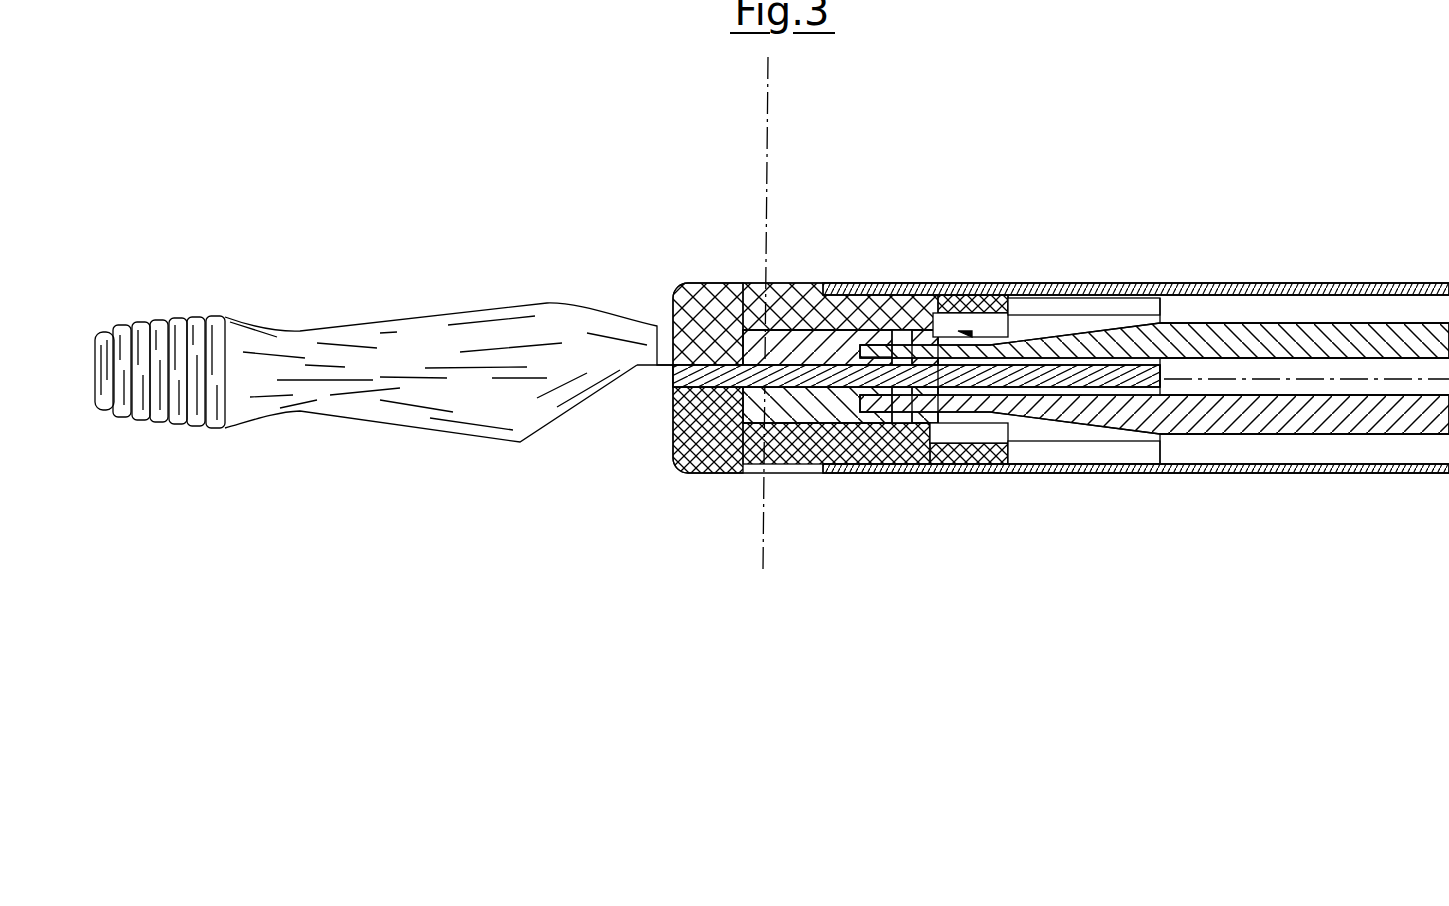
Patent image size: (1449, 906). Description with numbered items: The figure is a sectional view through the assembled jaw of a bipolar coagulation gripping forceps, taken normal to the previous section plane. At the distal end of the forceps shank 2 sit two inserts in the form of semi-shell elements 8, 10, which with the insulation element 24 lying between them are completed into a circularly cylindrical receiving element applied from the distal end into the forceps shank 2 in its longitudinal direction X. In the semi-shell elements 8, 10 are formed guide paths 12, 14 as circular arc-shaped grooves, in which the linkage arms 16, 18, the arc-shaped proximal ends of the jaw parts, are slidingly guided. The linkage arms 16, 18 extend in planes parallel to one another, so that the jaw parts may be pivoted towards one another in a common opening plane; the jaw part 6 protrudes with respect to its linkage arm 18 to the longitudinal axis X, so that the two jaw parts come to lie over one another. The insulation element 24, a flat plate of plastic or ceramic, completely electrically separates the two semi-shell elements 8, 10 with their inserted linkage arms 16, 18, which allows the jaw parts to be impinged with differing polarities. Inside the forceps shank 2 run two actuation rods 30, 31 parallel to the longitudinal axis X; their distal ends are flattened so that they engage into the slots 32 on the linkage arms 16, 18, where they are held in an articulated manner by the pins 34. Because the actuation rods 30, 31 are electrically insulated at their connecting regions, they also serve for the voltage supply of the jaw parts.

The forceps shank 2 is at (1230, 285).
The jaw part 6 is at (408, 340).
The semi-shell element 8 is at (788, 473).
The semi-shell element 10 is at (832, 297).
The guide path 12 is at (720, 473).
The guide path 14 is at (790, 297).
The linkage arm 16 is at (847, 473).
The linkage arm 18 is at (885, 300).
The insulation element 24 is at (673, 383).
The actuation rod 30 is at (1357, 340).
The actuation rod 31 is at (1303, 434).
The slots 32 is at (953, 313).
The pins 34 is at (968, 340).
The longitudinal axis X is at (1417, 382).